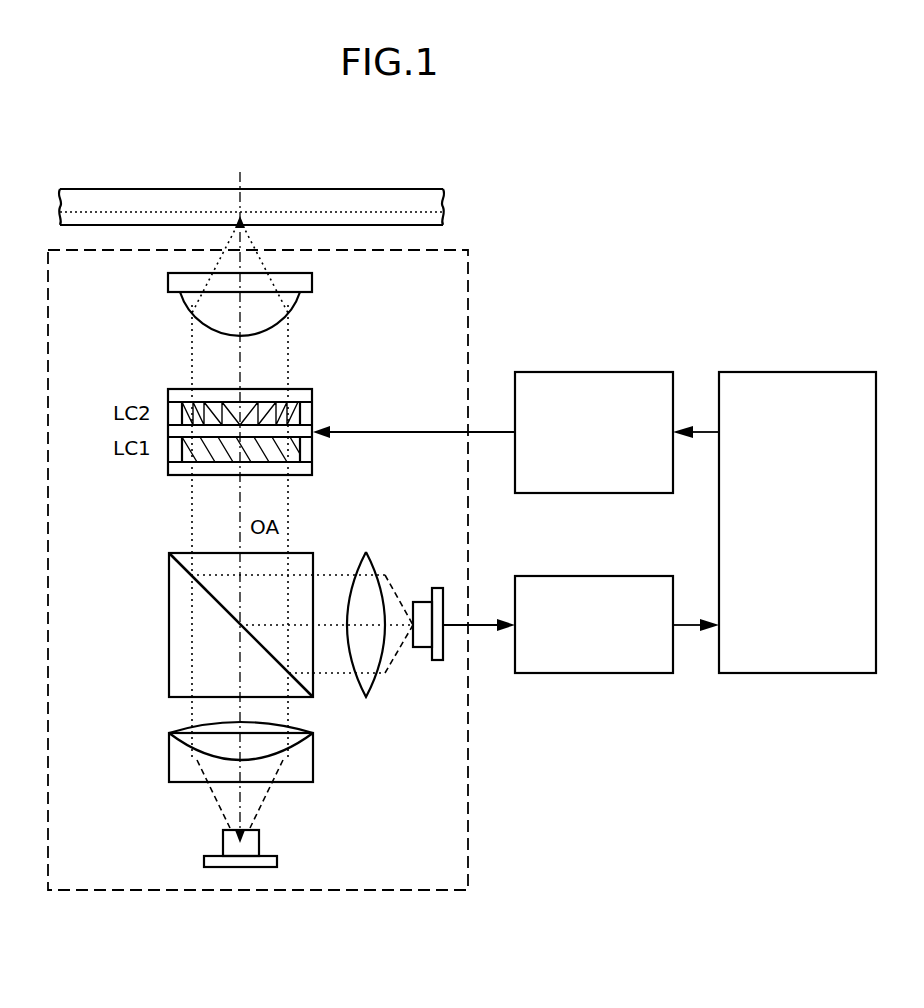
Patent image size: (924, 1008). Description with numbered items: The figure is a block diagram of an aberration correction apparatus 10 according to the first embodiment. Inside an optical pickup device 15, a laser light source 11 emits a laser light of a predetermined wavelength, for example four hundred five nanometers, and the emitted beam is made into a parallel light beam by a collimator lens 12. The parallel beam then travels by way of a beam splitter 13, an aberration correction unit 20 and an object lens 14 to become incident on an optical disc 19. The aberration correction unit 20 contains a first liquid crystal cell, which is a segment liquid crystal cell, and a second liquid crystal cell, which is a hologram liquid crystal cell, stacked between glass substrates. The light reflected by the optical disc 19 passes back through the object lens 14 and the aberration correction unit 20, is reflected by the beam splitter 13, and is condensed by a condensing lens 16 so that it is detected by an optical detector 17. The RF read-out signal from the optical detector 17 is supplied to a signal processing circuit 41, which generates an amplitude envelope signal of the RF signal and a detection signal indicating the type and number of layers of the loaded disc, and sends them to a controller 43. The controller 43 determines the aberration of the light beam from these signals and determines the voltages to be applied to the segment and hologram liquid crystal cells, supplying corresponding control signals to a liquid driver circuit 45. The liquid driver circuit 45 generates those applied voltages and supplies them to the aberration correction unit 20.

The aberration correction apparatus 10 is at (635, 236).
The laser light source 11 is at (204, 860).
The collimator lens 12 is at (169, 746).
The beam splitter 13 is at (169, 590).
The object lens 14 is at (168, 285).
The optical pickup device 15 is at (468, 297).
The condensing lens 16 is at (370, 557).
The optical detector 17 is at (438, 662).
The optical disc 19 is at (443, 197).
The aberration correction unit 20 is at (312, 397).
The signal processing circuit 41 is at (603, 576).
The controller 43 is at (808, 348).
The liquid driver circuit 45 is at (603, 372).